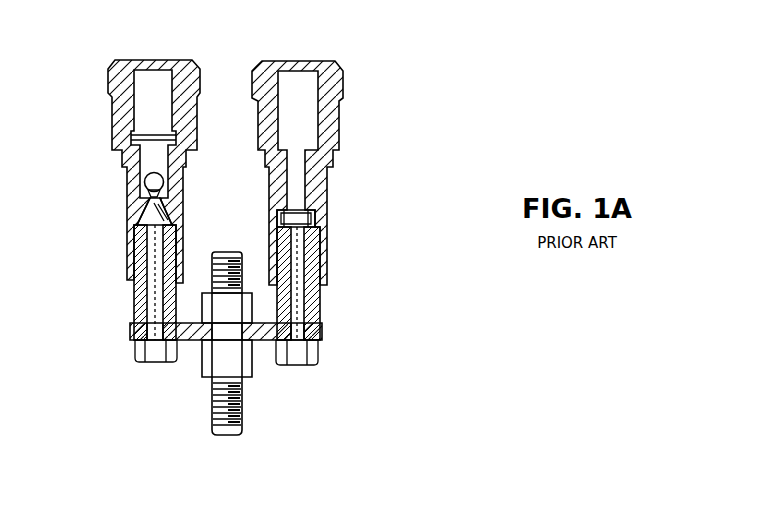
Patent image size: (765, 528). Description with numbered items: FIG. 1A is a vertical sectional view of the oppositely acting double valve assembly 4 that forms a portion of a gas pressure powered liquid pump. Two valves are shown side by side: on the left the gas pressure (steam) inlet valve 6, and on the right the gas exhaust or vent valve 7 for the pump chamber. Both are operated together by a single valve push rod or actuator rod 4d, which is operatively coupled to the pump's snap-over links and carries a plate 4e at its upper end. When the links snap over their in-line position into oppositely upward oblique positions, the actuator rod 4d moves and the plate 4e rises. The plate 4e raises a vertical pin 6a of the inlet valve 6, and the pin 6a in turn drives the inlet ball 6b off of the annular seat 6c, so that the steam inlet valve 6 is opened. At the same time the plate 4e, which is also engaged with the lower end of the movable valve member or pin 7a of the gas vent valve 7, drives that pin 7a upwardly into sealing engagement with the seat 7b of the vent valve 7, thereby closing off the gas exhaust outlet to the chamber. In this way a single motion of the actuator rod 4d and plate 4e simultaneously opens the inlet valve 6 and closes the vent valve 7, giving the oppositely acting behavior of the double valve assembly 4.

The prior art coupling assembly 4 is at (402, 138).
The gas pressure (steam) inlet valve 6 is at (86, 86).
The vertical pin 6a is at (153, 256).
The inlet ball 6b is at (136, 177).
The annular seat 6c is at (137, 203).
The gas exhaust or vent valve 7 is at (357, 87).
The movable valve member or pin 7a is at (298, 305).
The seat 7b is at (312, 212).
The valve push rod or actuator rod 4d is at (232, 424).
The plate 4e is at (131, 329).